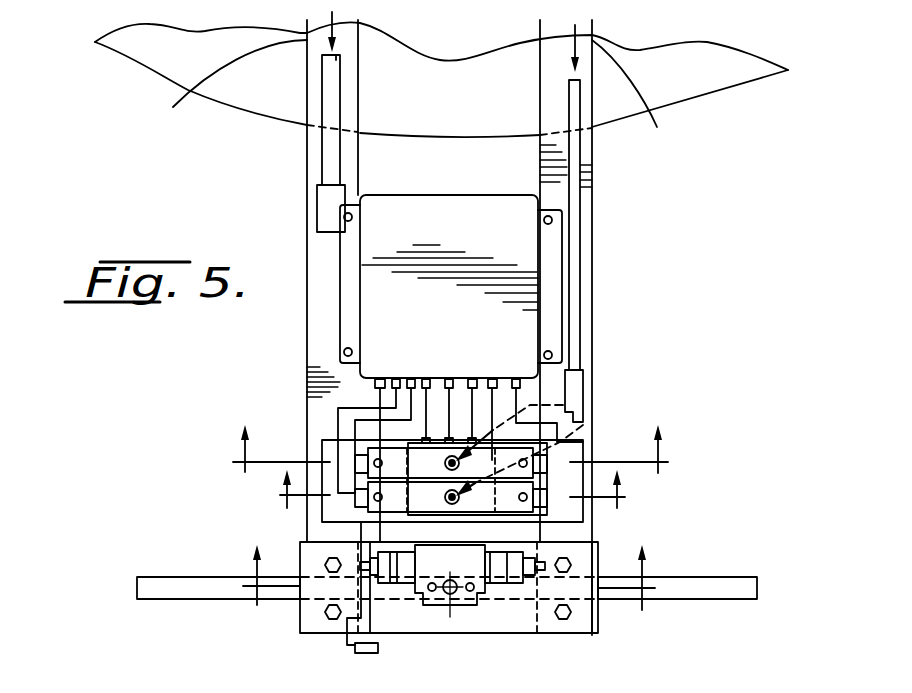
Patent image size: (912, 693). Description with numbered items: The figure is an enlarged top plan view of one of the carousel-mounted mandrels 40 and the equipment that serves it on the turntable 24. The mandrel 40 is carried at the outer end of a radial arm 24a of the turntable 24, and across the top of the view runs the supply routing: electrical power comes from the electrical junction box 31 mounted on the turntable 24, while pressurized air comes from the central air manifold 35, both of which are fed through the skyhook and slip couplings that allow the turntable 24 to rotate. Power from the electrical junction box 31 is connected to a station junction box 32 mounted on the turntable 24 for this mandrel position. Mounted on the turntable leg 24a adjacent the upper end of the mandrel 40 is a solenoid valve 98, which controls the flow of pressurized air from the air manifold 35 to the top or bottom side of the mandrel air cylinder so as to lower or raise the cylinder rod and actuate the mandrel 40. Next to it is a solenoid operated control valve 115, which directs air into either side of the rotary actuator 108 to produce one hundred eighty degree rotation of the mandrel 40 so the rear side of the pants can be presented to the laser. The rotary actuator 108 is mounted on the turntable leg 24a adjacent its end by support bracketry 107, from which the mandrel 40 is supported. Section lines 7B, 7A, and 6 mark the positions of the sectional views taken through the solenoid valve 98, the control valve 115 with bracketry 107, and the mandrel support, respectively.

The turntable 24 is at (132, 57).
The radial arm 24a is at (313, 328).
The electrical junction box 31 is at (180, 122).
The central air manifold 35 is at (708, 223).
The station junction box 32 is at (510, 313).
The solenoid valve 98 is at (395, 457).
The solenoid operated control valve 115 is at (512, 502).
The section line 7B is at (451, 454).
The section line 7A is at (453, 495).
The support bracketry 107 is at (419, 626).
The rotary actuator 108 is at (469, 600).
The mandrel 40 is at (188, 597).
The section line 6 is at (447, 598).